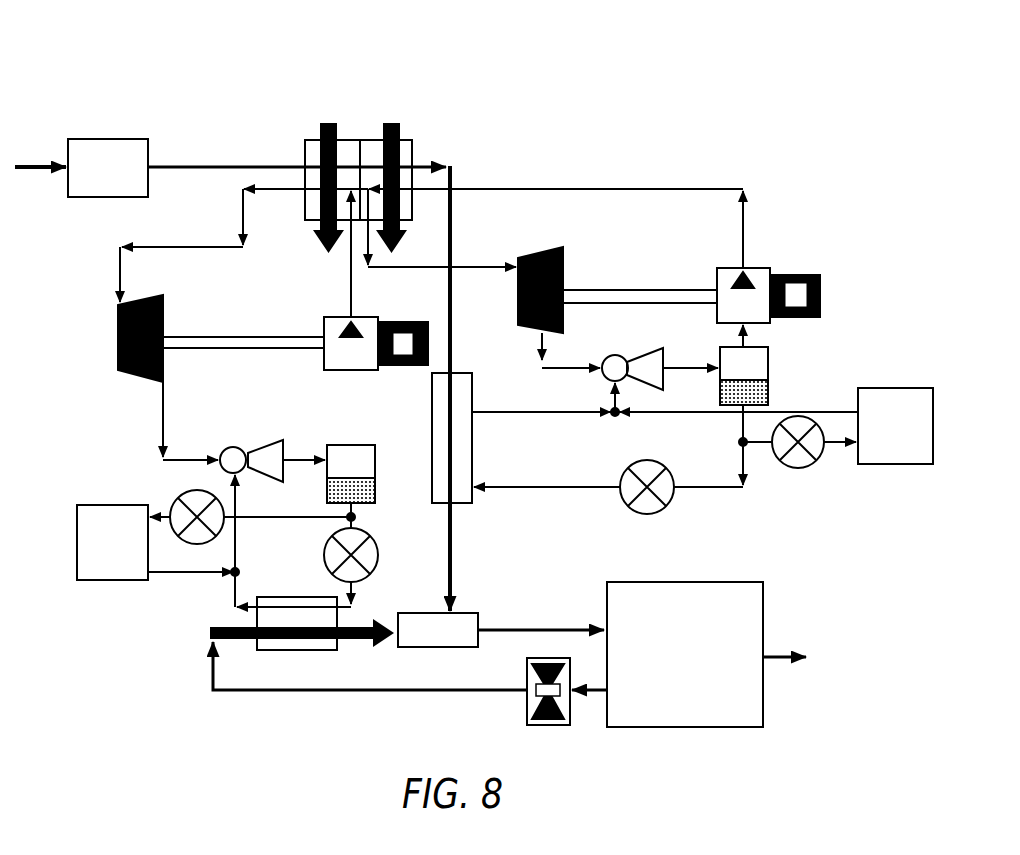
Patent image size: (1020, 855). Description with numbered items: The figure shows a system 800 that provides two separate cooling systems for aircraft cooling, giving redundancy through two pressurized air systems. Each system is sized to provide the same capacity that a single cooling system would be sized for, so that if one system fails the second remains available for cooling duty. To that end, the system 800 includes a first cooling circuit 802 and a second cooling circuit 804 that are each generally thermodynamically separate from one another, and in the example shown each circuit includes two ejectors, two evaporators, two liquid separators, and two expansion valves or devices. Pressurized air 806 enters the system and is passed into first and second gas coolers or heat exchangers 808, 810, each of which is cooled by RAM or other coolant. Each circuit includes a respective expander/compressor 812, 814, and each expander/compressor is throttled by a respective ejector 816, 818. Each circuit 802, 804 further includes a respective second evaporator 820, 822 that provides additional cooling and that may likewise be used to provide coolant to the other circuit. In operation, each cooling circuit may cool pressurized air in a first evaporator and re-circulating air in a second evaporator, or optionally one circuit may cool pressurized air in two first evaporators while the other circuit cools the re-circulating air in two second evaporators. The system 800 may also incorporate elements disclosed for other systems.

The system 800 is at (158, 48).
The first cooling circuit 802 is at (201, 770).
The second cooling circuit 804 is at (598, 158).
The pressurized air 806 is at (92, 138).
The first gas cooler or heat exchanger 808 is at (312, 140).
The second gas cooler or heat exchanger 810 is at (407, 140).
The expander/compressor 812 is at (95, 268).
The expander/compressor 814 is at (768, 247).
The ejector 816 is at (248, 426).
The ejector 818 is at (618, 348).
The second evaporator 820 is at (112, 582).
The second evaporator 822 is at (898, 464).